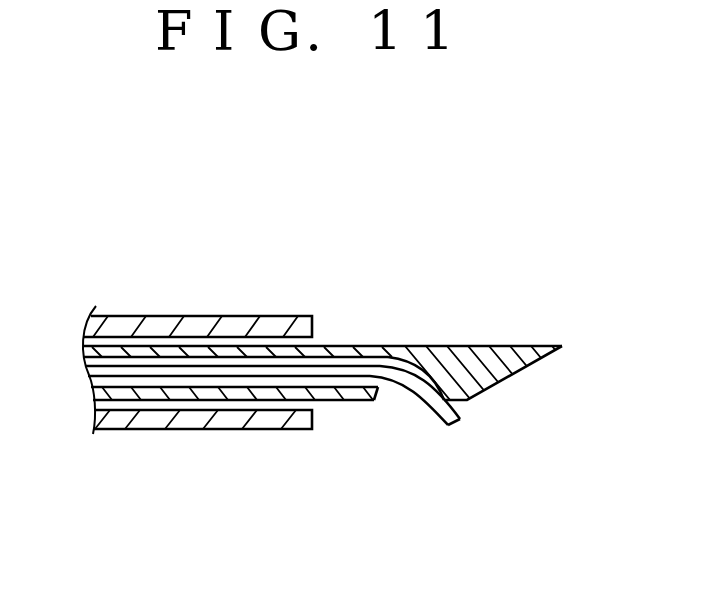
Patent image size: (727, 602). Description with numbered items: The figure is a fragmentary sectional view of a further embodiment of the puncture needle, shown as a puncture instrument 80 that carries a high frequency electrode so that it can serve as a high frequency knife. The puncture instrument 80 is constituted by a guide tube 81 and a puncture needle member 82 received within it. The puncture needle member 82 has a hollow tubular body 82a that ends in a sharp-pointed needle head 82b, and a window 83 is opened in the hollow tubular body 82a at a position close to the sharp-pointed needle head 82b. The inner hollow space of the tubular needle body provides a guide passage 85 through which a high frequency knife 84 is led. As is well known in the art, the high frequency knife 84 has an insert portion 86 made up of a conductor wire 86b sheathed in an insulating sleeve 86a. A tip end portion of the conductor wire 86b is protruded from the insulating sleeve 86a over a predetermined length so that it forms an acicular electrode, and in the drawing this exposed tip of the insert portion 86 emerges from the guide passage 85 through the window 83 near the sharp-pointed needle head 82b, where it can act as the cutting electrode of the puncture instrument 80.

The puncture instrument 80 is at (342, 310).
The guide tube 81 is at (190, 322).
The puncture needle member 82 is at (494, 345).
The hollow tubular body 82a is at (128, 350).
The sharp-pointed needle head 82b is at (536, 358).
The window 83 is at (379, 401).
The high frequency knife 84 is at (133, 385).
The guide passage 85 is at (242, 383).
The insert portion 86 is at (390, 368).
The insulating sleeve 86a is at (282, 372).
The conductor wire 86b is at (460, 427).